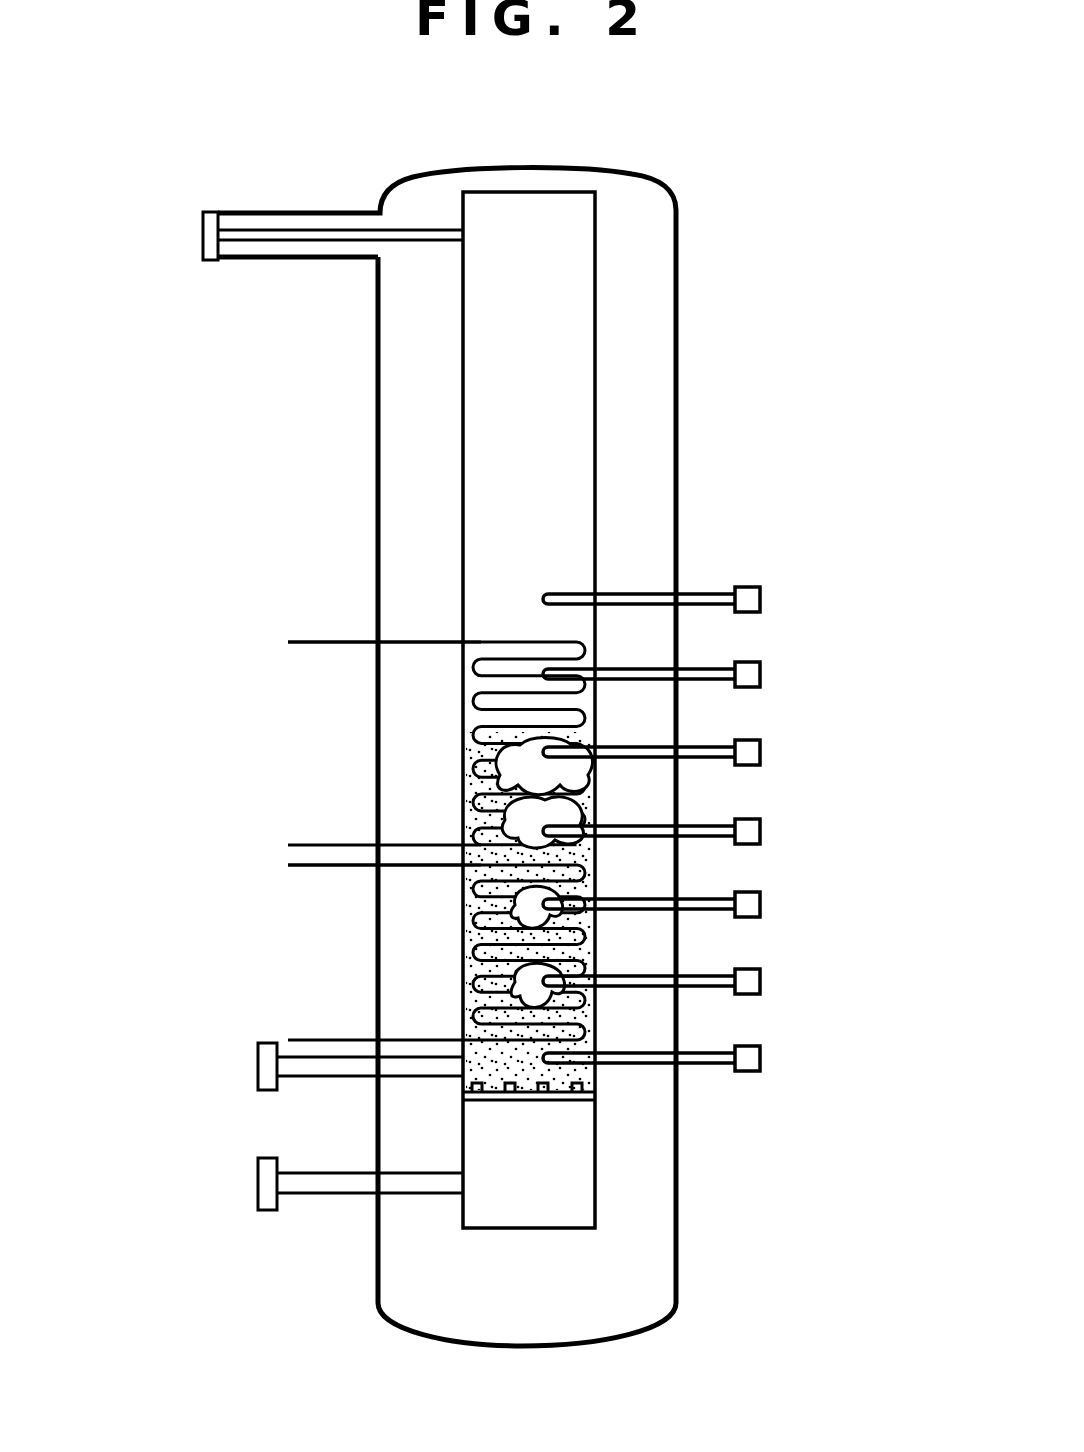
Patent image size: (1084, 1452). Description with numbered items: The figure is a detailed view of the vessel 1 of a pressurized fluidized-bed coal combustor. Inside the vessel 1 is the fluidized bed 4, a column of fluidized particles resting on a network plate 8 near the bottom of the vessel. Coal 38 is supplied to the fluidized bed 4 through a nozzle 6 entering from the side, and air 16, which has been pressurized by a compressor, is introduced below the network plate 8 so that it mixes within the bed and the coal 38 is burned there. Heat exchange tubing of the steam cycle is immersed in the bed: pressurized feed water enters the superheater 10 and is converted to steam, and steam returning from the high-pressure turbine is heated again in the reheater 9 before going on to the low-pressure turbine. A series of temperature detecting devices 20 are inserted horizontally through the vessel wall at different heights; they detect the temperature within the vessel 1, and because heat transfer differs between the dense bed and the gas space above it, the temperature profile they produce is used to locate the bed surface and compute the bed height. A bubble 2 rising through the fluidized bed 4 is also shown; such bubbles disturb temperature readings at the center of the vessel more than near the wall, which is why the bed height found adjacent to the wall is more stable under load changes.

The vessel 1 is at (680, 336).
The bubble 2 is at (490, 770).
The fluidized bed 4 is at (476, 464).
The nozzle 6 is at (268, 1041).
The network plate 8 is at (578, 1096).
The reheater 9 is at (316, 640).
The superheater 10 is at (473, 920).
The air 16 is at (256, 1183).
The temperature detecting device 20 is at (760, 598).
The coal 38 is at (256, 1064).